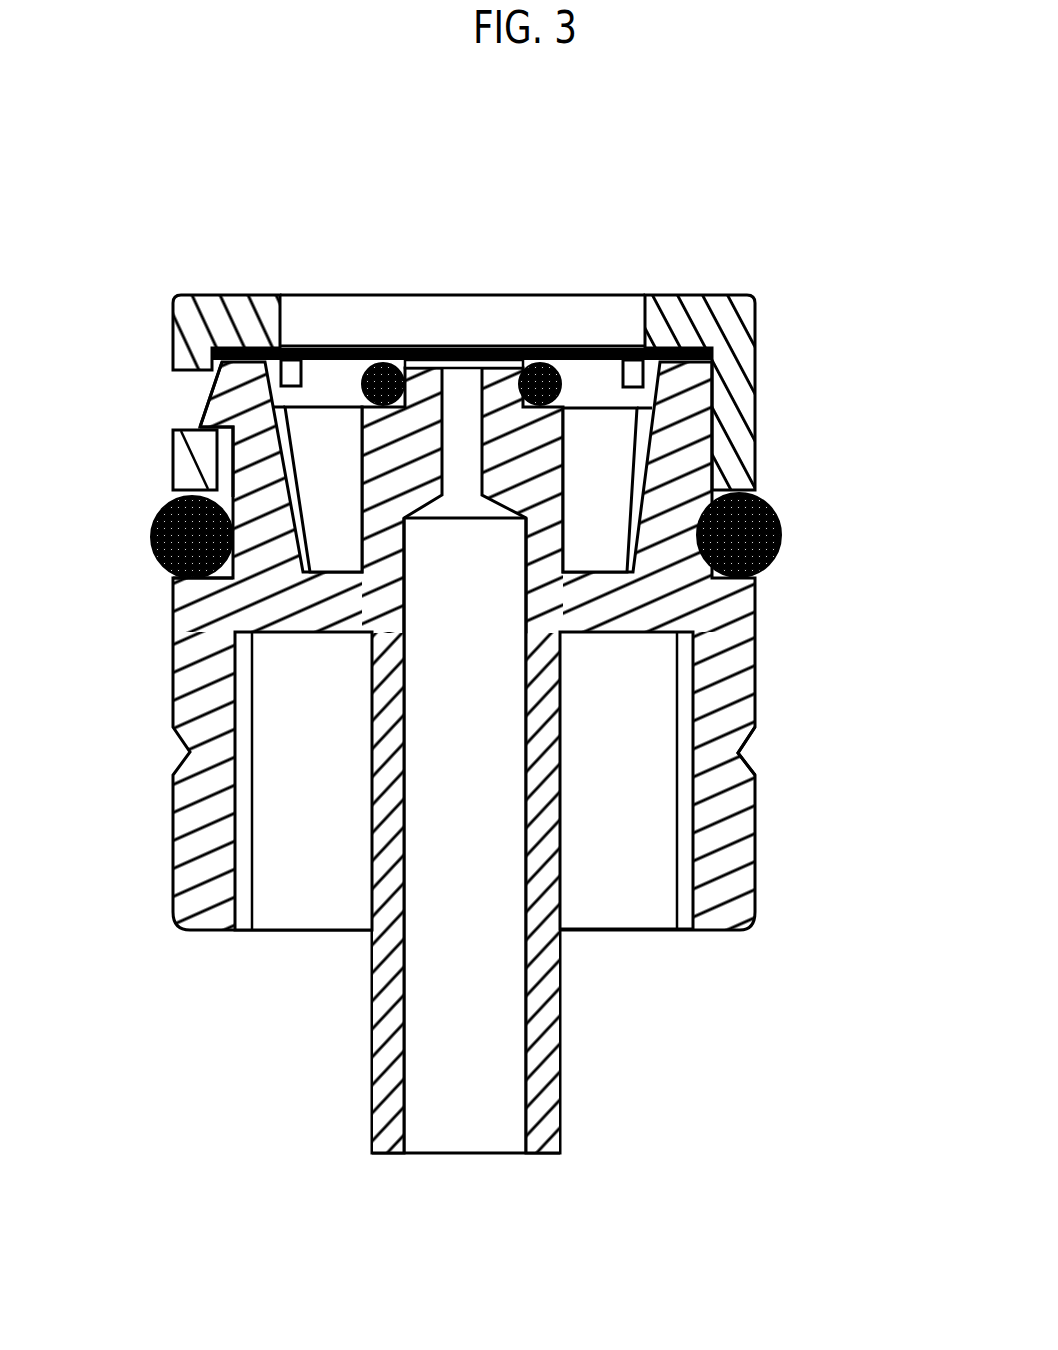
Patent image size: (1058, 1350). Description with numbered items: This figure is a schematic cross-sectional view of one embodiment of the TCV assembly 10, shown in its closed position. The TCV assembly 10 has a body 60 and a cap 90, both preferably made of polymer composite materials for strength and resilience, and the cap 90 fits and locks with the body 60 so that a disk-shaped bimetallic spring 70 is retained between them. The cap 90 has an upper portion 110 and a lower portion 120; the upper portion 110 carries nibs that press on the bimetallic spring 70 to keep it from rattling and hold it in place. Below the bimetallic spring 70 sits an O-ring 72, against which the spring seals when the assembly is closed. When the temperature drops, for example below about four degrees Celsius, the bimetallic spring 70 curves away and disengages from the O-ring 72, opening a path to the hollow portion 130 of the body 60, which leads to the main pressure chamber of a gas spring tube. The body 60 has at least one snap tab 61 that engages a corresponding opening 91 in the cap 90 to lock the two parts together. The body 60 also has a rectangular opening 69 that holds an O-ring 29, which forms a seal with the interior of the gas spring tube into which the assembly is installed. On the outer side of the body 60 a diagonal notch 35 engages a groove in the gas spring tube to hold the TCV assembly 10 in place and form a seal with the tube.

The TCV assembly 10 is at (464, 658).
The upper portion 110 is at (173, 305).
The cap 90 is at (753, 427).
The bimetallic spring 70 is at (318, 350).
The O-ring 72 is at (562, 390).
The O-ring 29 is at (776, 560).
The lower portion 120 is at (171, 450).
The body 60 is at (722, 793).
The snap tab 61 is at (203, 414).
The rectangular opening 69 is at (178, 598).
The opening 91 is at (172, 382).
The diagonal notch 35 is at (764, 742).
The hollow portion 130 is at (465, 835).